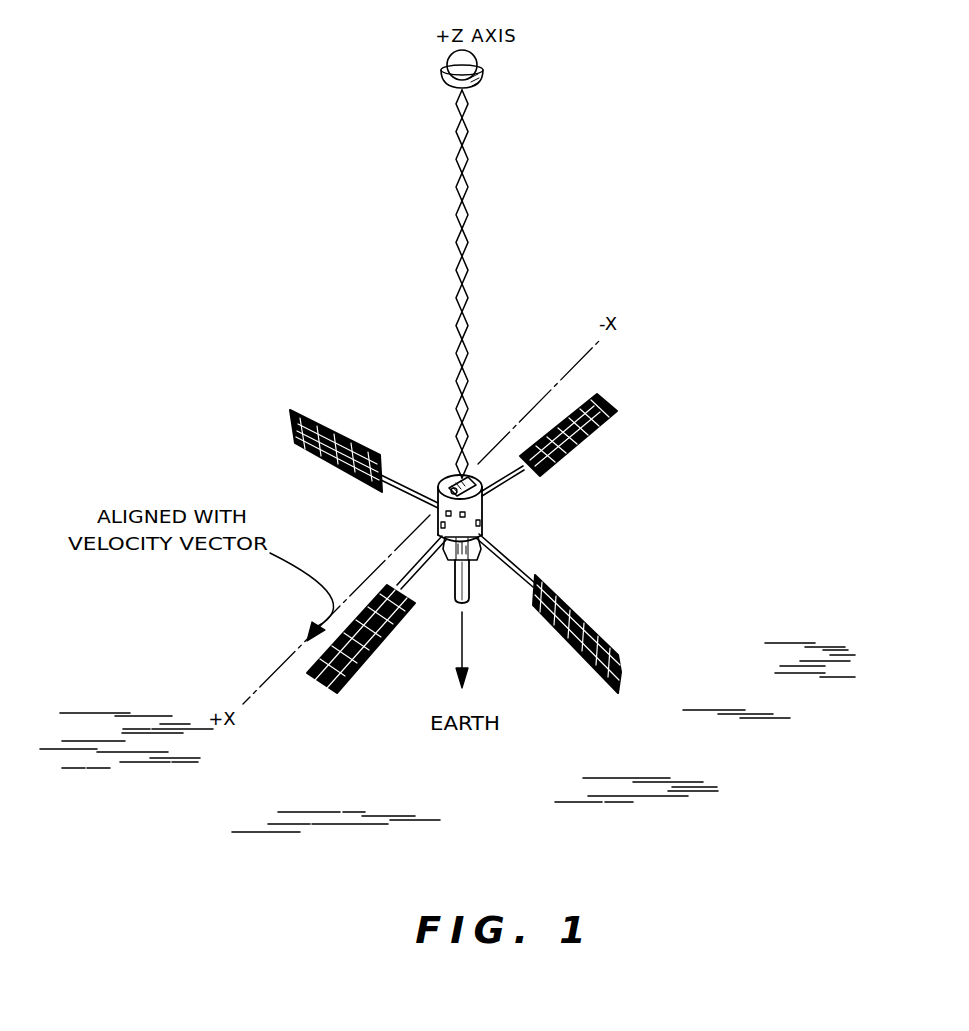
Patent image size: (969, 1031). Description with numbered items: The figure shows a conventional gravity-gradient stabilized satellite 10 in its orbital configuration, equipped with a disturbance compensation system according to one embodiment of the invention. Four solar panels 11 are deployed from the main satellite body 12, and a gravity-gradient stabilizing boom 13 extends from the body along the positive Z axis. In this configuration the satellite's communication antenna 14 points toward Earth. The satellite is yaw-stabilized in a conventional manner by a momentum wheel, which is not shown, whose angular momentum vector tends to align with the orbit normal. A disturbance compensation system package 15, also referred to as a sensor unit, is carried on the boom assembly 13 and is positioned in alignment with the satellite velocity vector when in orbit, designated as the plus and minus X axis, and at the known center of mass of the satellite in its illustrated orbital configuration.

The spacecraft 10 is at (568, 307).
The solar panels 11 is at (335, 433).
The main satellite body 12 is at (423, 523).
The gravity-gradient stabilizing boom 13 is at (465, 188).
The communication antenna 14 is at (470, 583).
The disturbance compensation system package 15 is at (468, 470).